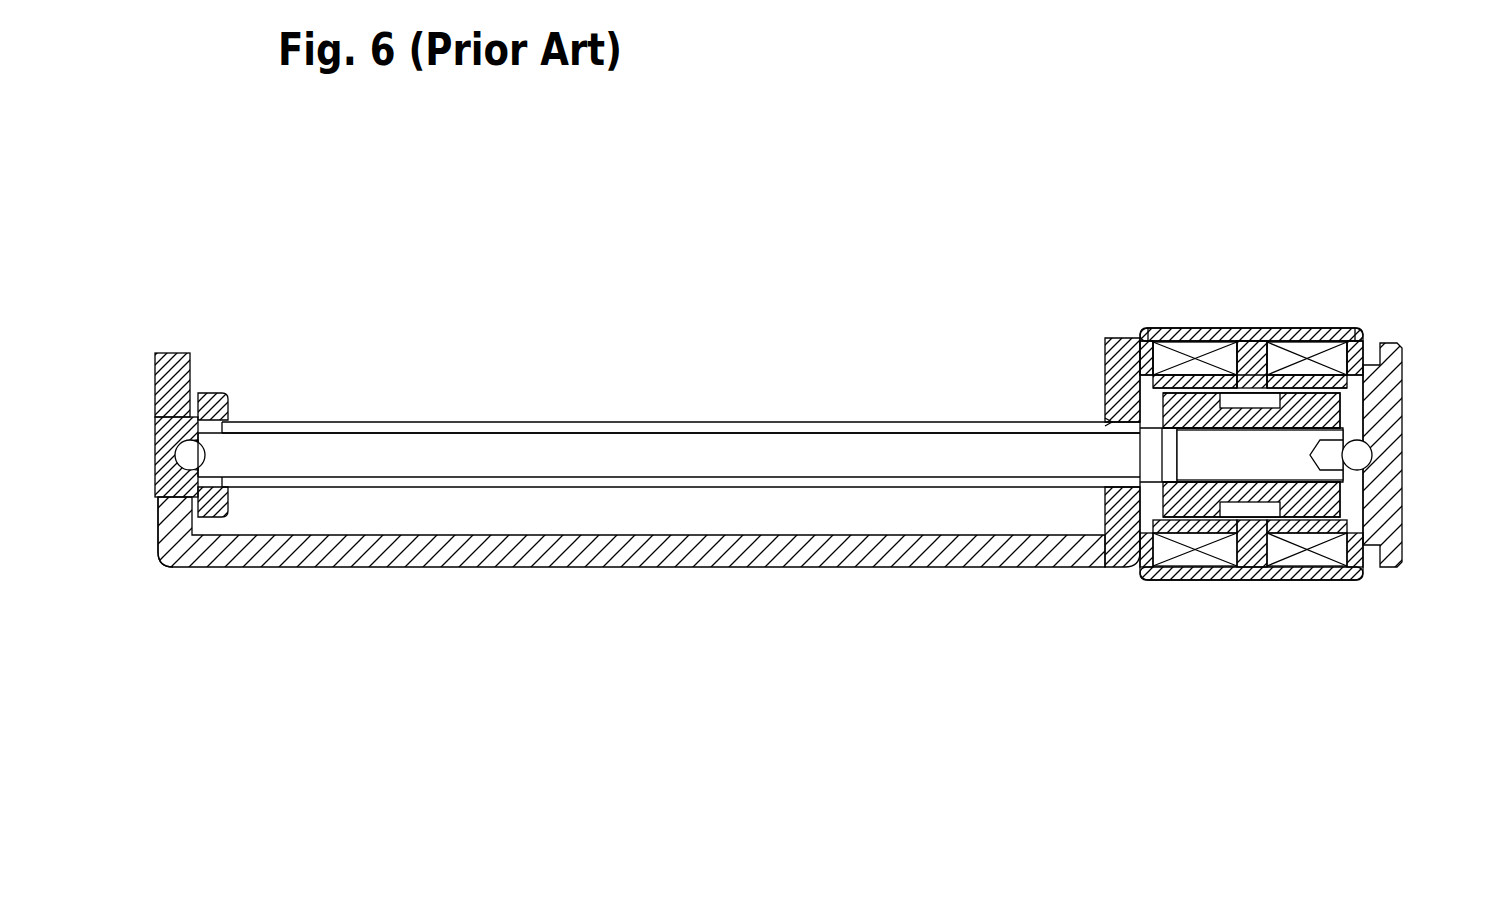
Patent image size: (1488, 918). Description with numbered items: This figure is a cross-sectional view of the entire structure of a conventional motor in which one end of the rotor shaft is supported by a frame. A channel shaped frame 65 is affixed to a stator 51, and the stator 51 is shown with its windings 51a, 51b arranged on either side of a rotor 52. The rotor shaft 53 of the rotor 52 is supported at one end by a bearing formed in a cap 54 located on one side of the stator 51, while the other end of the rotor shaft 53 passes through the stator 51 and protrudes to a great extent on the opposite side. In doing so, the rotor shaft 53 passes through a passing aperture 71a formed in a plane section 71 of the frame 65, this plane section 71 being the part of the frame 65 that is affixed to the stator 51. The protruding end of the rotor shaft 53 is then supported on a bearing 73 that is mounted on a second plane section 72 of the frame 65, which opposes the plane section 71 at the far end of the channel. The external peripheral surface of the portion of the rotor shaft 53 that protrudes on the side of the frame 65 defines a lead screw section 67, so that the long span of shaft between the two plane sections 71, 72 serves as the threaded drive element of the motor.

The stator 51 is at (1363, 203).
The first coil 51a is at (1200, 328).
The second coil 51b is at (1318, 328).
The rotor 52 is at (1305, 505).
The rotor shaft 53 is at (782, 450).
The cap 54 is at (1402, 400).
The channel shaped frame 65 is at (727, 550).
The lead screw section 67 is at (562, 432).
The plane section 71 is at (1123, 512).
The passing aperture 71a is at (1103, 424).
The plane section 72 is at (193, 363).
The bearing 73 is at (157, 500).